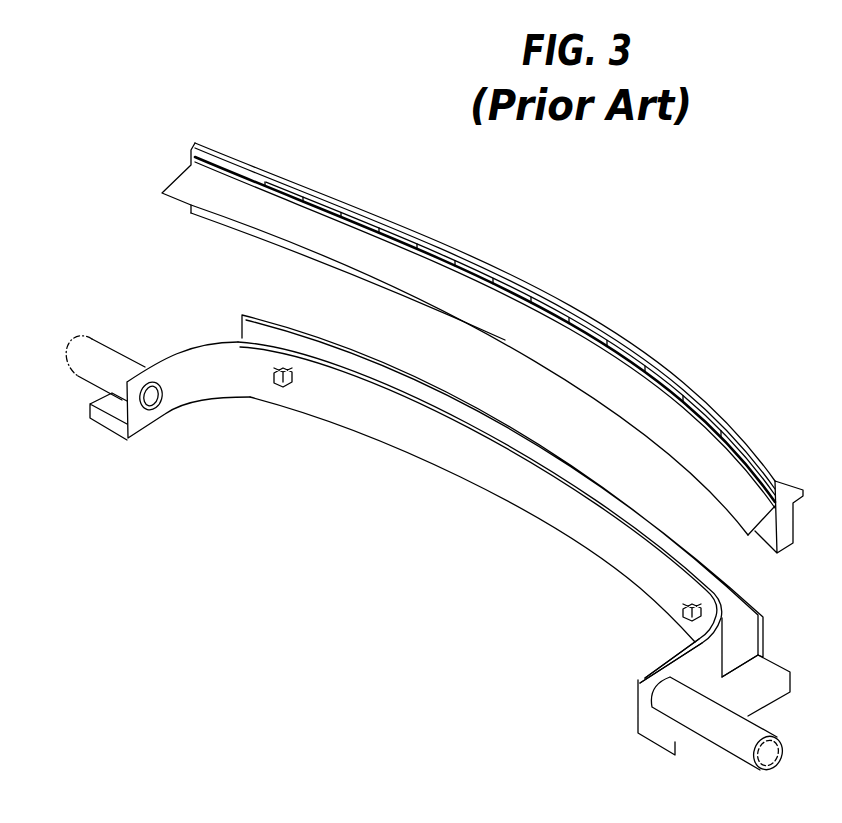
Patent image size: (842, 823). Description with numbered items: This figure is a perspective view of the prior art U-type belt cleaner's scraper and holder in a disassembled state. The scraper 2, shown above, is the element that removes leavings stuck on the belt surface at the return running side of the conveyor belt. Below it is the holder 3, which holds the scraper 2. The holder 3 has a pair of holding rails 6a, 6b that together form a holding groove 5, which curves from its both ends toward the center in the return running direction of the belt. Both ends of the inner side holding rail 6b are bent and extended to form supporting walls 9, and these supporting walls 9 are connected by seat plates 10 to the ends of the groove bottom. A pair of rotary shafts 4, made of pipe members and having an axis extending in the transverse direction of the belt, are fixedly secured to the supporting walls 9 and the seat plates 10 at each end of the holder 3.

The scraper 2 is at (540, 294).
The holder 3 is at (445, 499).
The rotary shaft 4 is at (103, 350).
The holding groove 5 is at (424, 392).
The holding rail 6a is at (505, 415).
The inner side holding rail 6b is at (538, 493).
The supporting wall 9 is at (147, 422).
The seat plate 10 is at (110, 430).